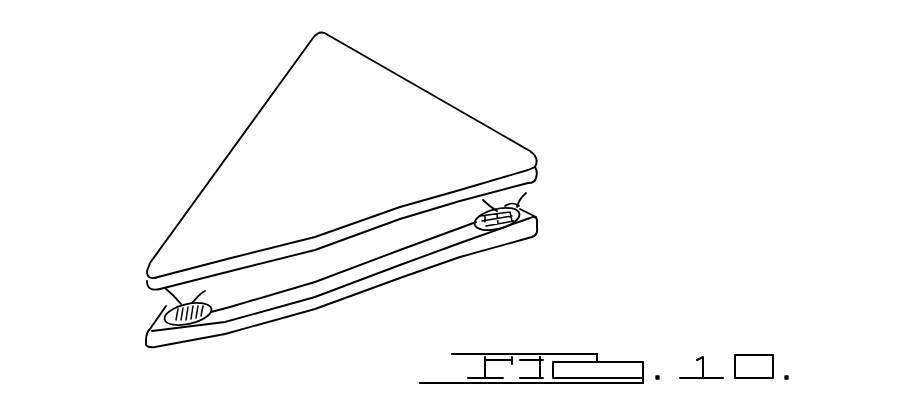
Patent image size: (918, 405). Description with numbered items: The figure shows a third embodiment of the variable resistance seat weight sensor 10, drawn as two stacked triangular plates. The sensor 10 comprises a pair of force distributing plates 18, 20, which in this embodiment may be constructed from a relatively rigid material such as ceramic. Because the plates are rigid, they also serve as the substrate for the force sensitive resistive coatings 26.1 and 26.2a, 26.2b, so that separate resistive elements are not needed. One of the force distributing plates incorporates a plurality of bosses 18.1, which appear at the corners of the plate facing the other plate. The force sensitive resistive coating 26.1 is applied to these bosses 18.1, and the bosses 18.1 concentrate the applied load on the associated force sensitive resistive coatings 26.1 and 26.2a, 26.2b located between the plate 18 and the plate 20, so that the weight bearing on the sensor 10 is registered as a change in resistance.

The variable resistance seat weight sensor 10 is at (193, 153).
The force distributing plate 18 is at (428, 88).
The boss 18.1 is at (178, 294).
The force distributing plate 20 is at (420, 254).
The force sensitive resistive coating 26.1 is at (507, 198).
The force sensitive resistive coating 26.2a is at (490, 228).
The force sensitive resistive coating 26.2b is at (520, 211).